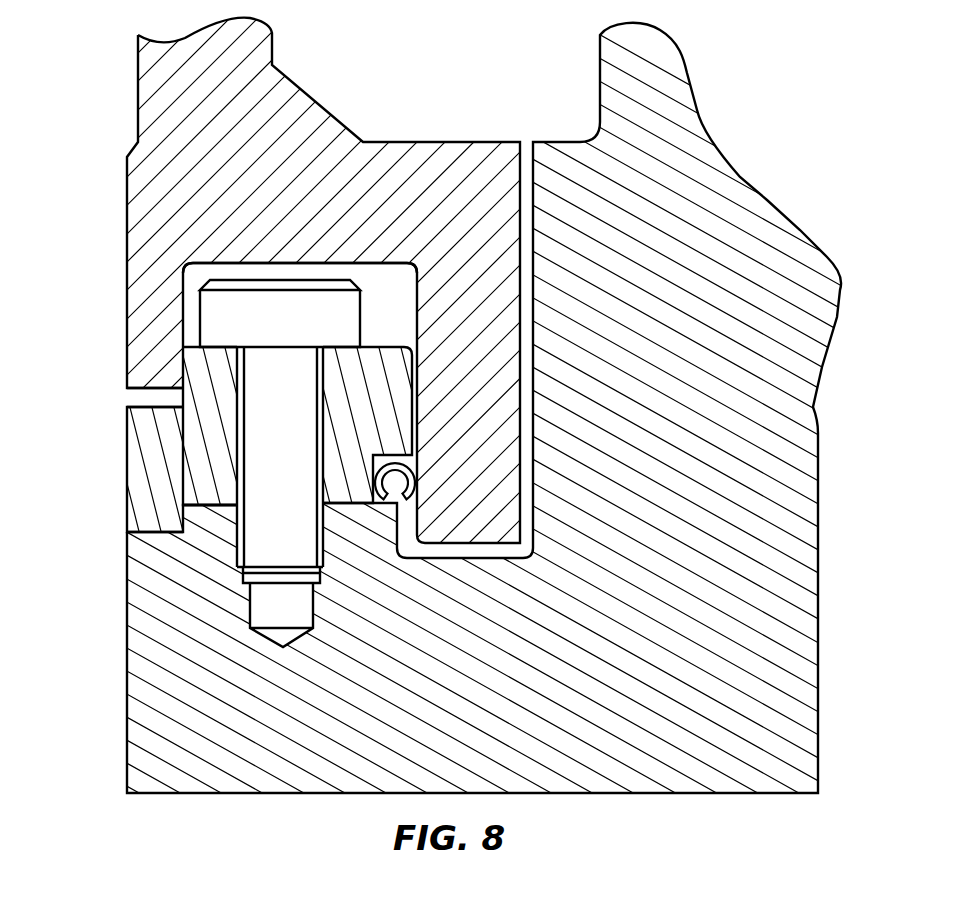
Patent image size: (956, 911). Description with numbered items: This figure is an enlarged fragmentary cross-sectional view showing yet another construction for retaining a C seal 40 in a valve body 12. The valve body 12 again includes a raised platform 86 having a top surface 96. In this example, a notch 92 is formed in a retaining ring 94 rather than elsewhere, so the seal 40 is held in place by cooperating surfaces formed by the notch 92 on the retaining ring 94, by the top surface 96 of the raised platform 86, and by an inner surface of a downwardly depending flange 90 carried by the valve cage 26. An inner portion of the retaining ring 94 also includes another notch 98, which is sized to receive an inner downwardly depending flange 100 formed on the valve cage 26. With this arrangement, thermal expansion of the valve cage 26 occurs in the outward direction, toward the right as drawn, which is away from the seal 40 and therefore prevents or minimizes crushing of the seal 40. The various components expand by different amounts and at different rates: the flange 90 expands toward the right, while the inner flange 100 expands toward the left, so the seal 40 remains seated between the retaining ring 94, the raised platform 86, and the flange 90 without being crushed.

The valve body 12 is at (787, 497).
The valve cage 26 is at (148, 212).
The seal 40 is at (415, 478).
The raised platform 86 is at (206, 522).
The downwardly depending flange 90 is at (457, 430).
The notch 92 is at (373, 456).
The retaining ring 94 is at (187, 445).
The top surface 96 is at (210, 495).
The notch 98 is at (183, 398).
The inner downwardly depending flange 100 is at (155, 316).